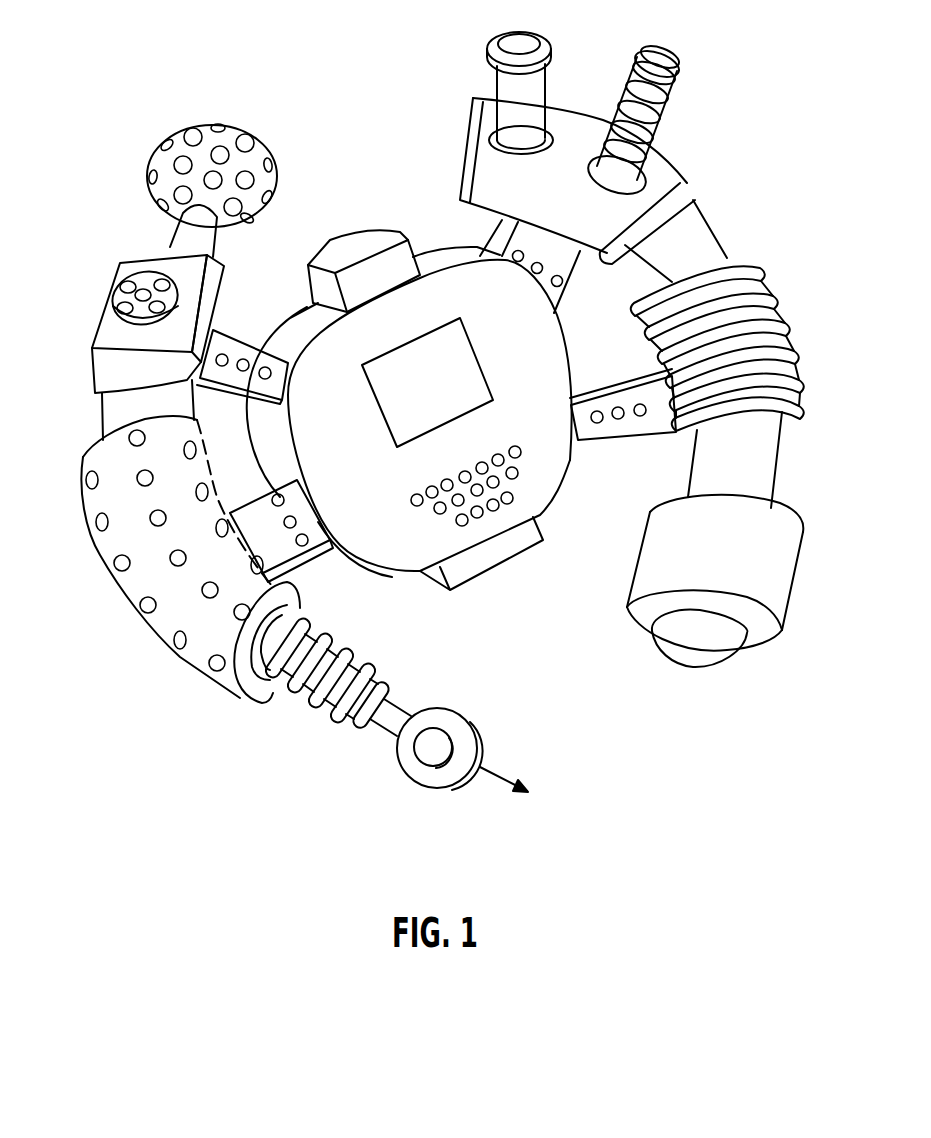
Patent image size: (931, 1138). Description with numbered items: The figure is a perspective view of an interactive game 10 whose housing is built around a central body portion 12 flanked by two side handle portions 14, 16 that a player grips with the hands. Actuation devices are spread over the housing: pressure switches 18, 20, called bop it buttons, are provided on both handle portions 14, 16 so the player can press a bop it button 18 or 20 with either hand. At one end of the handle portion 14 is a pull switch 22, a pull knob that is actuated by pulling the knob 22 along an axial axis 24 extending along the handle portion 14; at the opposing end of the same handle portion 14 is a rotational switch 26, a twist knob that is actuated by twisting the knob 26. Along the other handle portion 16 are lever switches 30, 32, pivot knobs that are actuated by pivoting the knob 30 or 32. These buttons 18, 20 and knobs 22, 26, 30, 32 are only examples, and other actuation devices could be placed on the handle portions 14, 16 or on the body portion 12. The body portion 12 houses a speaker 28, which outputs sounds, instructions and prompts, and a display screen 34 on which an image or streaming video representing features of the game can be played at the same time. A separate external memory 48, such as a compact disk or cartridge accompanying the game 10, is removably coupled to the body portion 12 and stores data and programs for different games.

The interactive game 10 is at (278, 66).
The central body portion 12 is at (471, 578).
The side handle portion 14 is at (107, 548).
The side handle portion 16 is at (748, 267).
The pressure switch 18 is at (127, 263).
The pressure switch 20 is at (677, 650).
The pull switch 22 is at (455, 707).
The axial axis 24 is at (500, 771).
The rotational switch 26 is at (232, 130).
The speaker 28 is at (534, 493).
The lever switch 30 is at (659, 58).
The lever switch 32 is at (512, 42).
The display screen 34 is at (480, 372).
The external memory 48 is at (347, 240).